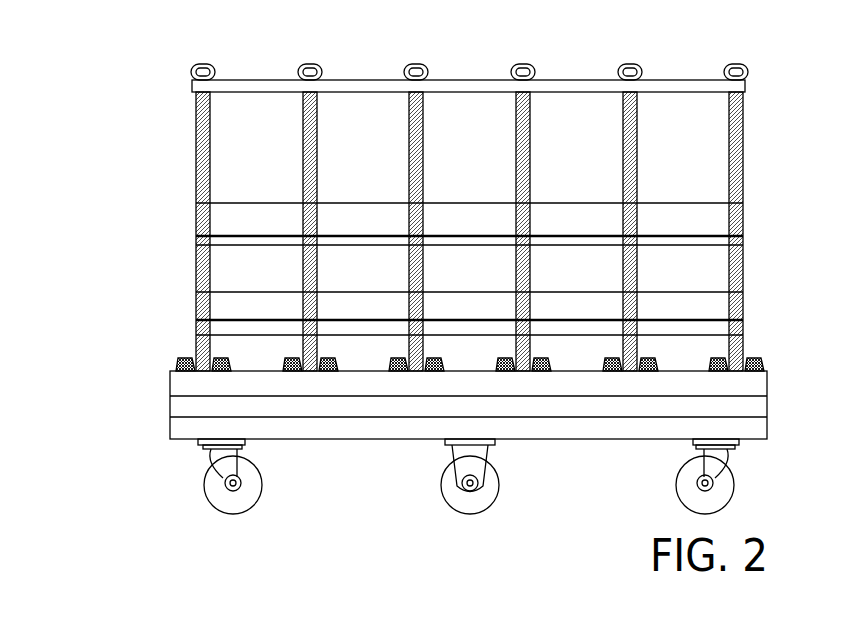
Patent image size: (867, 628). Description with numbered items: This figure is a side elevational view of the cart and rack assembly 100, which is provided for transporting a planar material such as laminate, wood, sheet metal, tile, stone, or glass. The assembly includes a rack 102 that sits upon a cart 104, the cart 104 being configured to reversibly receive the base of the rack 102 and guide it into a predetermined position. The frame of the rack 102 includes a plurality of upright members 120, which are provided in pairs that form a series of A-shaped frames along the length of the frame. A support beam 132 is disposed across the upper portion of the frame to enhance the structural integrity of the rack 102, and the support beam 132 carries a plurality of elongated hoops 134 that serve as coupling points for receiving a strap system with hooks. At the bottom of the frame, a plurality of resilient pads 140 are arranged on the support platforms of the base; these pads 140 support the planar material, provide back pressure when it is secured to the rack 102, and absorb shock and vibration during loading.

The cart and rack assembly 100 is at (118, 52).
The rack 102 is at (193, 188).
The cart 104 is at (170, 430).
The upright member 120 is at (636, 287).
The support beam 132 is at (683, 80).
The hoop 134 is at (204, 64).
The pad 140 is at (609, 372).